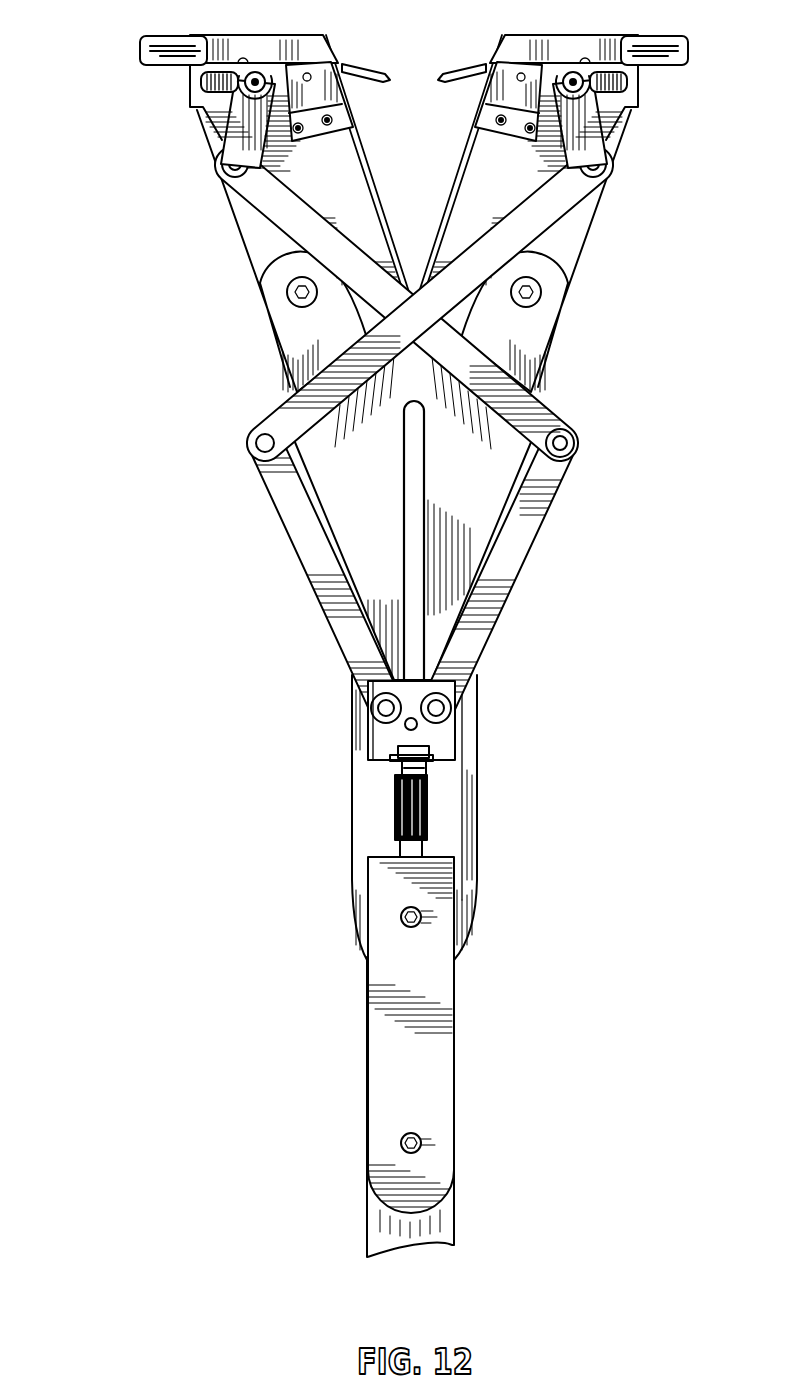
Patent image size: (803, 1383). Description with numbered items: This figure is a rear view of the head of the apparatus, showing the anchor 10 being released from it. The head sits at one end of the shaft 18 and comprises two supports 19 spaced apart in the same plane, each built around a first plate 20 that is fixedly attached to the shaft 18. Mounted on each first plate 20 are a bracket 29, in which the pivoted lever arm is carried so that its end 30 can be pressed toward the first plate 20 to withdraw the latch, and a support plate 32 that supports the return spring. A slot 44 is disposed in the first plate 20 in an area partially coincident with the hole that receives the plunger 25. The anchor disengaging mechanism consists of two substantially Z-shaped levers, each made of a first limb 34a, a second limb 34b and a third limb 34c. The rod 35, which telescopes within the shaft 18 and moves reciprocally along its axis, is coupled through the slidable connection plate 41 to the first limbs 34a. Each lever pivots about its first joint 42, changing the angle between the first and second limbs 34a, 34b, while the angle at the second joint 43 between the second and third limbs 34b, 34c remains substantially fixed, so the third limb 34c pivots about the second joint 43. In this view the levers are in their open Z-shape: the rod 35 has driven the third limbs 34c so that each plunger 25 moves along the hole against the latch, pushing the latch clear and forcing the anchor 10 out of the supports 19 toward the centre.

The anchor 10 is at (420, 323).
The shaft 18 is at (462, 495).
The support 19 is at (262, 262).
The first plate 20 is at (267, 46).
The plunger 25 is at (205, 118).
The bracket 29 is at (350, 131).
The end 30 is at (150, 60).
The support plate 32 is at (338, 64).
The first limb 34a is at (317, 562).
The second limb 34b is at (243, 195).
The third limb 34c is at (227, 140).
The rod 35 is at (428, 768).
The connection plate 41 is at (462, 683).
The first joint 42 is at (256, 444).
The second joint 43 is at (228, 172).
The slot 44 is at (200, 78).